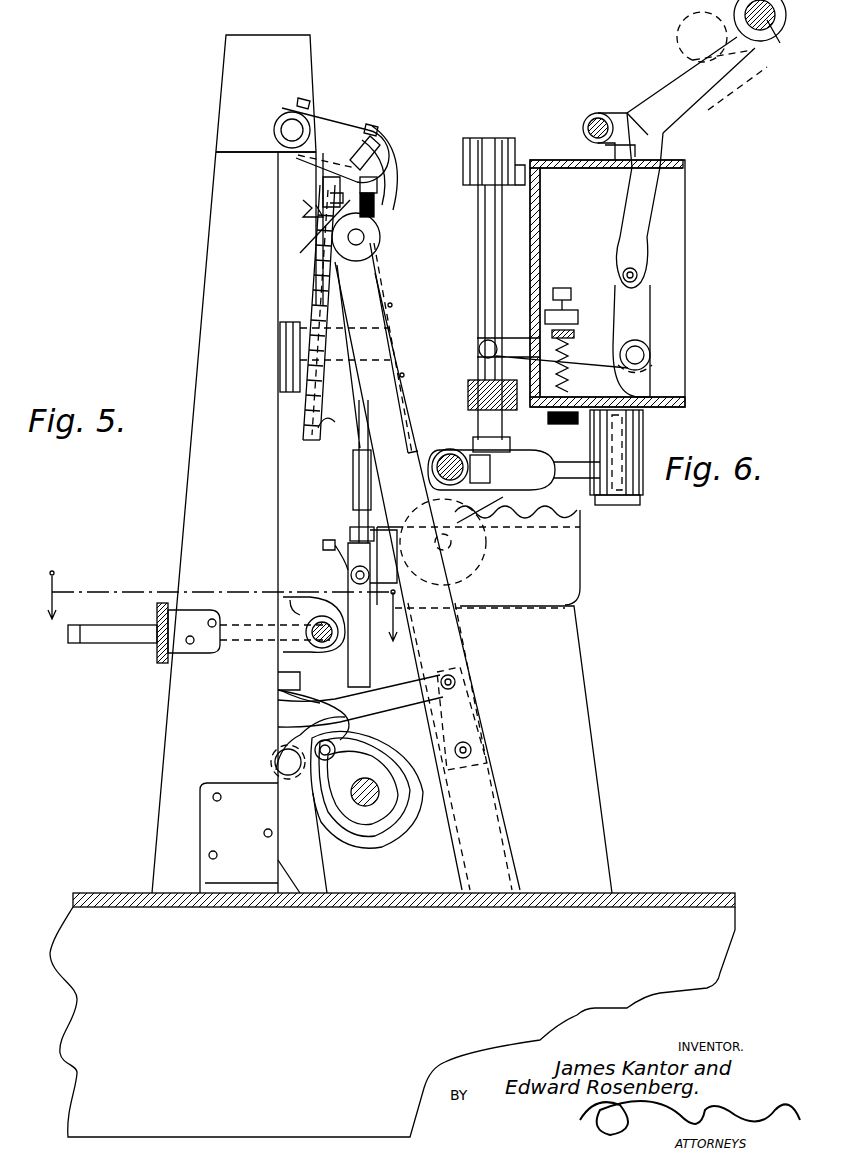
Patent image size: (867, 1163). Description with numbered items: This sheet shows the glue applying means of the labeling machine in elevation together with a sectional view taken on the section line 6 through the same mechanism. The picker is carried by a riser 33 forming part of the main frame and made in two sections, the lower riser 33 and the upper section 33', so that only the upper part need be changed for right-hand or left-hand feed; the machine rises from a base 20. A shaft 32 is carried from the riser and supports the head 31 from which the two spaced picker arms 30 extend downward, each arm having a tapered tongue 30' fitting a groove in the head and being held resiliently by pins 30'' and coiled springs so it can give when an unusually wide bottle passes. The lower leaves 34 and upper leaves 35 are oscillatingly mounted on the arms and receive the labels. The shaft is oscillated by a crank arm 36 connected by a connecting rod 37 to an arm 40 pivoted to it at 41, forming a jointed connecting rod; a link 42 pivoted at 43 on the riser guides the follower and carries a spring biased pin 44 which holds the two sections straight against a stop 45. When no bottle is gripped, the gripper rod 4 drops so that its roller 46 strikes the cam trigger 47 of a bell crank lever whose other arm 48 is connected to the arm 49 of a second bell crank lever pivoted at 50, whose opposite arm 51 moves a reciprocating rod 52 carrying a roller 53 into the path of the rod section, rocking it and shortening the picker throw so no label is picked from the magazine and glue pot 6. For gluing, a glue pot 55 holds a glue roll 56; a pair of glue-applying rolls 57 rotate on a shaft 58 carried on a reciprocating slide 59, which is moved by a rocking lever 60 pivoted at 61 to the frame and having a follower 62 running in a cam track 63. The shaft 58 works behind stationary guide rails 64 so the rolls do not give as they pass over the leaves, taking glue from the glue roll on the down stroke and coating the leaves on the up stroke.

In FIG. 6, the gripper rod 4 is at (778, 46).
In FIG. 5, the label magazine and glue pot 6 is at (212, 606).
In FIG. 5, the base 20 is at (130, 892).
In FIG. 5, the arms 30 is at (301, 453).
In FIG. 5, the tapered tongue 30' is at (302, 205).
In FIG. 5, the pins 30'' is at (359, 171).
In FIG. 5, the head 31 is at (318, 235).
In FIG. 5, the shaft 32 is at (290, 122).
In FIG. 5, the riser 33 is at (237, 464).
In FIG. 6, the riser 33 is at (684, 419).
In FIG. 5, the riser upper section 33' is at (240, 110).
In FIG. 5, the lower leaves 34 is at (336, 431).
In FIG. 5, the upper leaves 35 is at (318, 283).
In FIG. 5, the crank arm 36 is at (348, 130).
In FIG. 5, the connecting rod 37 is at (358, 395).
In FIG. 5, the arm 40 is at (368, 660).
In FIG. 5, the pivot 41 is at (350, 575).
In FIG. 5, the link 42 is at (278, 678).
In FIG. 6, the link 42 is at (572, 465).
In FIG. 6, the pivot 43 is at (622, 500).
In FIG. 5, the spring biased pin 44 is at (285, 700).
In FIG. 5, the stop 45 is at (338, 545).
In FIG. 6, the roller 46 is at (770, 42).
In FIG. 5, the cam trigger 47 is at (100, 637).
In FIG. 6, the cam trigger 47 is at (683, 110).
In FIG. 6, the arm 48 is at (632, 210).
In FIG. 6, the arm 49 is at (640, 290).
In FIG. 6, the pivot 50 is at (645, 355).
In FIG. 6, the arm 51 is at (586, 345).
In FIG. 5, the reciprocating rod 52 is at (322, 622).
In FIG. 6, the reciprocating rod 52 is at (480, 300).
In FIG. 6, the roller 53 is at (478, 452).
In FIG. 5, the glue pot 55 is at (585, 560).
In FIG. 5, the glue roll 56 is at (487, 542).
In FIG. 5, the glue-applying rolls 57 is at (375, 230).
In FIG. 5, the shaft 58 is at (366, 238).
In FIG. 5, the reciprocating slide 59 is at (390, 403).
In FIG. 5, the rocking lever 60 is at (412, 700).
In FIG. 5, the pivot 61 is at (280, 760).
In FIG. 5, the follower 62 is at (332, 758).
In FIG. 5, the cam track 63 is at (388, 818).
In FIG. 5, the guide rails 64 is at (392, 280).